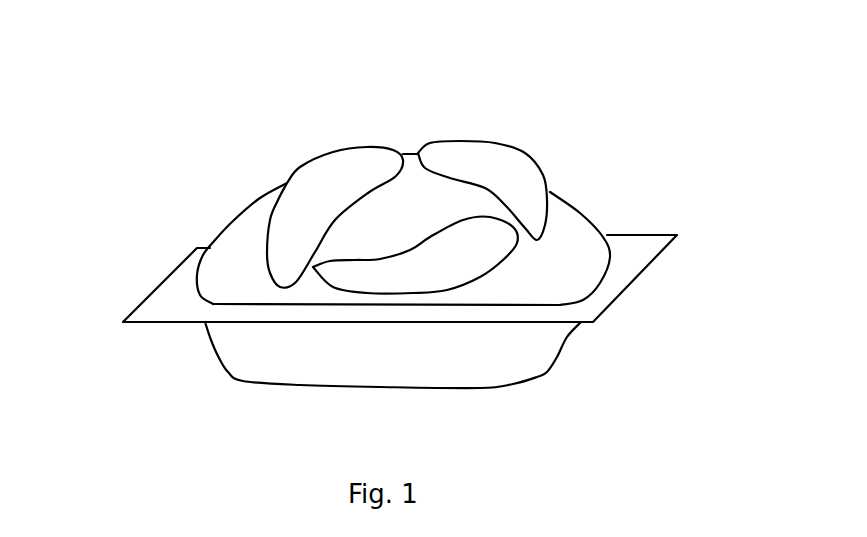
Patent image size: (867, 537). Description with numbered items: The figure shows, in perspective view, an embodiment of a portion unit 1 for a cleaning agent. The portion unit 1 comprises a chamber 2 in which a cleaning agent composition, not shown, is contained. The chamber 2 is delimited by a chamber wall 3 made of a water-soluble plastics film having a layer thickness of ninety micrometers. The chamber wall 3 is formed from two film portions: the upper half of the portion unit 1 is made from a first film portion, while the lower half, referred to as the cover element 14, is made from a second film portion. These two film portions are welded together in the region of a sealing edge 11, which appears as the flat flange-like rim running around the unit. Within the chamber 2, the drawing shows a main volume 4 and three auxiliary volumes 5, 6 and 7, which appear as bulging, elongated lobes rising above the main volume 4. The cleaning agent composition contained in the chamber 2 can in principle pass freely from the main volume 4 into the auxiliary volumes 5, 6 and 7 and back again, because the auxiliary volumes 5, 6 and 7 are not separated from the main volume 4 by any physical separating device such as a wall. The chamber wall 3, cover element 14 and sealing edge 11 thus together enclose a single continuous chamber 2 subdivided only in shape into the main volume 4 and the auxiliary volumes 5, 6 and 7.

The portion unit 1 is at (667, 126).
The chamber 2 is at (532, 340).
The chamber wall 3 is at (245, 237).
The main volume 4 is at (580, 233).
The auxiliary volume 5 is at (313, 180).
The auxiliary volume 6 is at (503, 173).
The auxiliary volume 7 is at (387, 280).
The sealing edge 11 is at (172, 310).
The cover element 14 is at (215, 355).